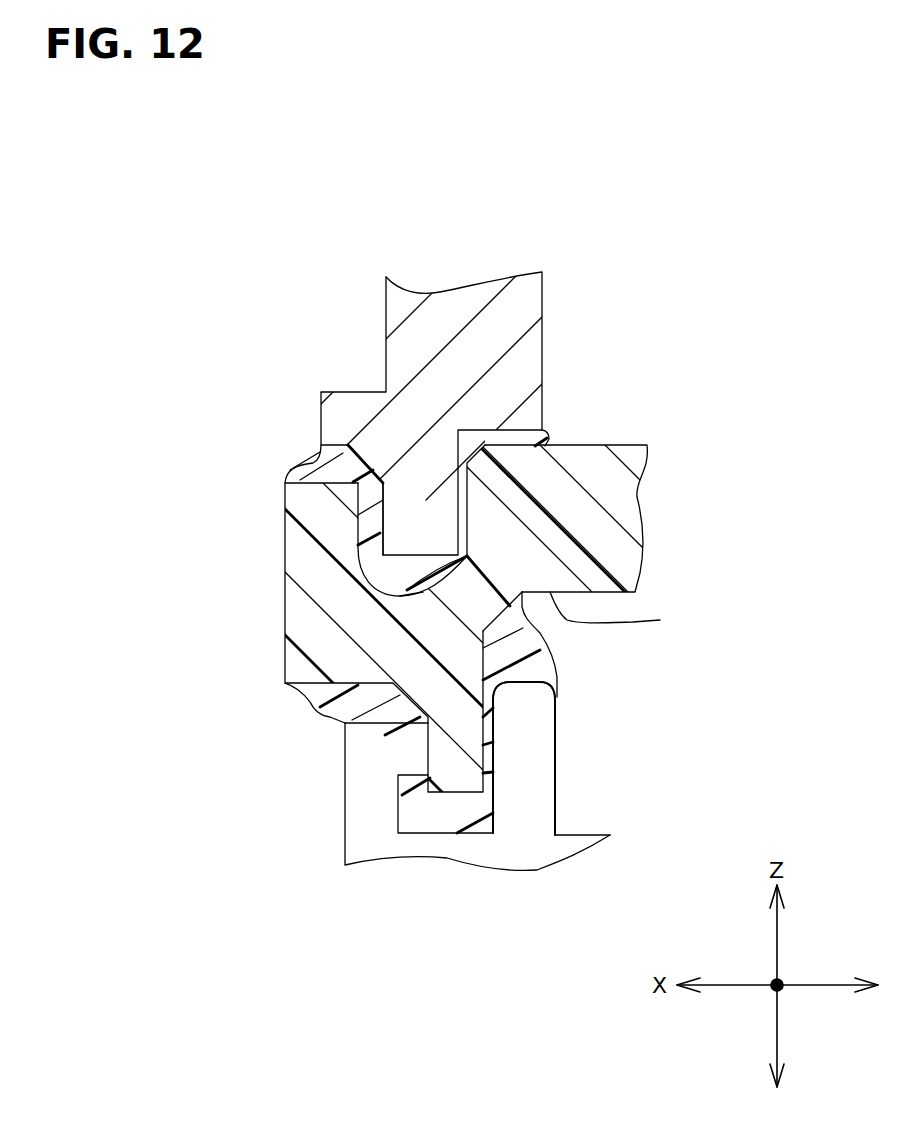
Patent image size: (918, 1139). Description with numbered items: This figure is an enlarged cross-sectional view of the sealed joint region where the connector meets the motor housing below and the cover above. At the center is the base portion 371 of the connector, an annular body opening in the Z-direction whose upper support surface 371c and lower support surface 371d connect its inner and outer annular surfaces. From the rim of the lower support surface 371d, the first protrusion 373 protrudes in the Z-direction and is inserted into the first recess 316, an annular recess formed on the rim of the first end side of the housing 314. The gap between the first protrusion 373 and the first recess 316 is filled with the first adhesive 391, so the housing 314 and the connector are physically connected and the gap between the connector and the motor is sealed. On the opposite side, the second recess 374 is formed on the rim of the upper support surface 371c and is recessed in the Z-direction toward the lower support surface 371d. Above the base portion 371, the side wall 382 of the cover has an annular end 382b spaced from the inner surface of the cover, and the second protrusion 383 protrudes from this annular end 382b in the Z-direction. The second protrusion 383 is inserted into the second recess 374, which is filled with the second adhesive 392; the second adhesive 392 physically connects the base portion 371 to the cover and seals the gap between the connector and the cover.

The side wall 382 is at (388, 322).
The annular end 382b is at (497, 442).
The upper support surface 371c is at (592, 445).
The lower support surface 371d is at (648, 623).
The base portion 371 is at (297, 655).
The second recess 374 is at (395, 567).
The second protrusion 383 is at (358, 535).
The second adhesive 392 is at (305, 465).
The first adhesive 391 is at (330, 716).
The housing 314 is at (348, 852).
The first recess 316 is at (417, 822).
The first protrusion 373 is at (483, 749).